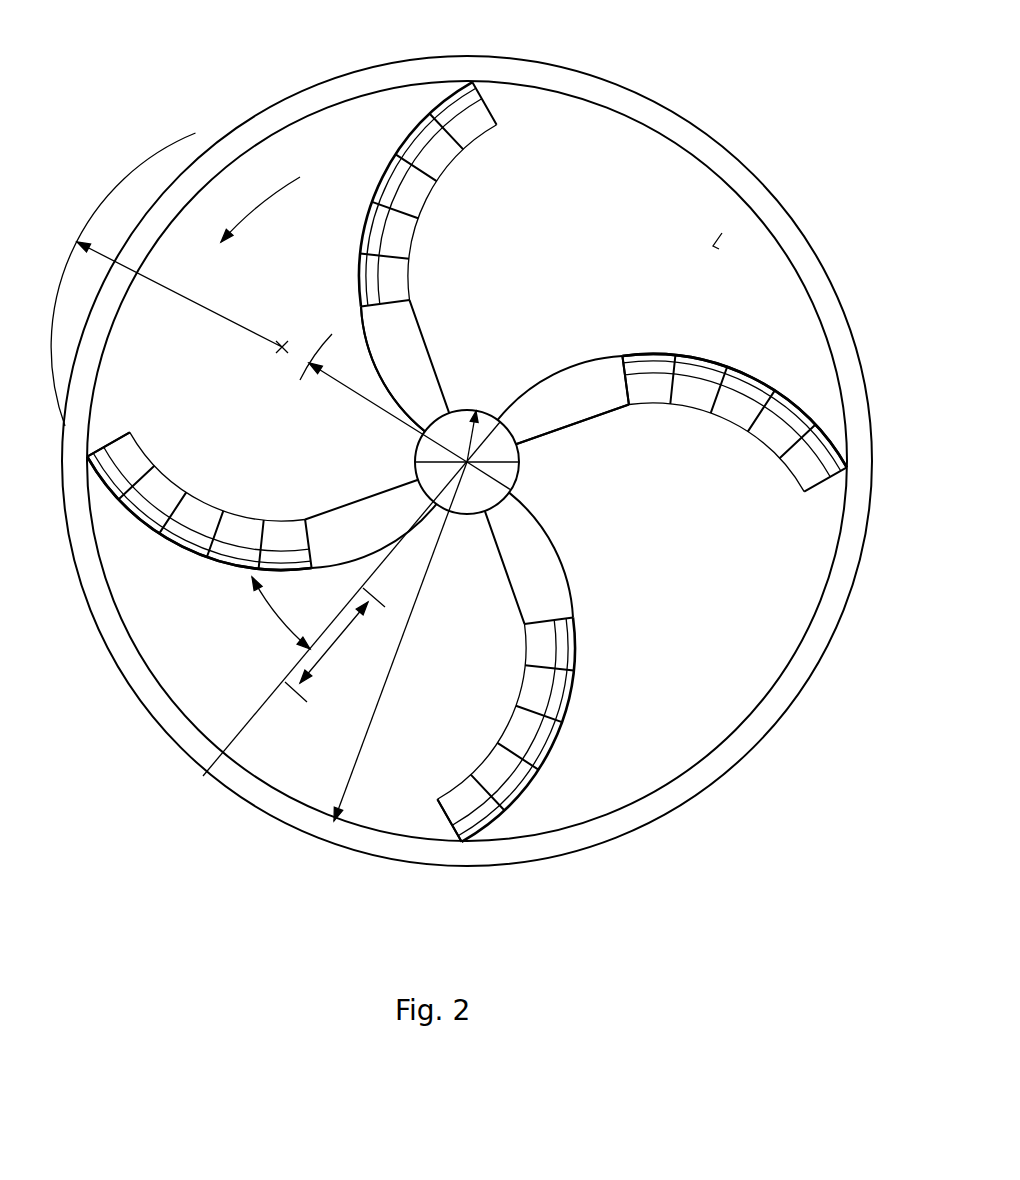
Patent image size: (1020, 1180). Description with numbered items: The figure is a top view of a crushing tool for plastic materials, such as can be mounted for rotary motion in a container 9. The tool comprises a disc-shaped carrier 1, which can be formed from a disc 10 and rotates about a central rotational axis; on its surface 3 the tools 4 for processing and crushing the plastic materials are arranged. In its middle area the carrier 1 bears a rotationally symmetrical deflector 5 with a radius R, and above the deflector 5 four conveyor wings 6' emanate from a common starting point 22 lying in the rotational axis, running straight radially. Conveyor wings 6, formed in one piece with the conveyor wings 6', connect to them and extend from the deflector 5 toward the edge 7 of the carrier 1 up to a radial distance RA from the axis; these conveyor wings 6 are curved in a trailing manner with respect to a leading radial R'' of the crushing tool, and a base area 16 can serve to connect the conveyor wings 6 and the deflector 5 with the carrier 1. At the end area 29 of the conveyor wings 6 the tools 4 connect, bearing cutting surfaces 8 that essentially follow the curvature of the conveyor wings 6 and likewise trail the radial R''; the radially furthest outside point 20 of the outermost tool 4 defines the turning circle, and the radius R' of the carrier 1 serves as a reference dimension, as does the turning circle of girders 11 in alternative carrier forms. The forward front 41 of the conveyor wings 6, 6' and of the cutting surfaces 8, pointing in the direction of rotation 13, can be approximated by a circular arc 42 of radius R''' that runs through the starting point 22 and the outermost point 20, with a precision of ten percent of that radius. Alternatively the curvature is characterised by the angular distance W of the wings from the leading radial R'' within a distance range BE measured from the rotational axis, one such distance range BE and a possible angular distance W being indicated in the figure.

The carrier 1 is at (492, 446).
The surface 3 is at (722, 233).
The tools 4 is at (695, 370).
The deflector 5 is at (460, 427).
The conveyor wings 6 is at (467, 461).
The conveyor wings 6' is at (404, 393).
The edge 7 is at (805, 268).
The cutting surfaces 8 is at (800, 392).
The container 9 is at (855, 342).
The disc 10 is at (665, 190).
The girders 11 is at (471, 490).
The direction of rotation 13 is at (257, 207).
The base area 16 is at (580, 392).
The outermost point 20 is at (85, 453).
The starting point 22 is at (472, 464).
The end area 29 is at (625, 362).
The forward front 41 is at (190, 566).
The circular arc 42 is at (93, 208).
The radius of the deflector R is at (527, 444).
The radial distance RA is at (383, 398).
The radius of the carrier R' is at (400, 641).
The radial R'' is at (351, 599).
The radius of the circular arc R''' is at (182, 297).
The angular distance W is at (282, 613).
The distance range BE is at (335, 645).